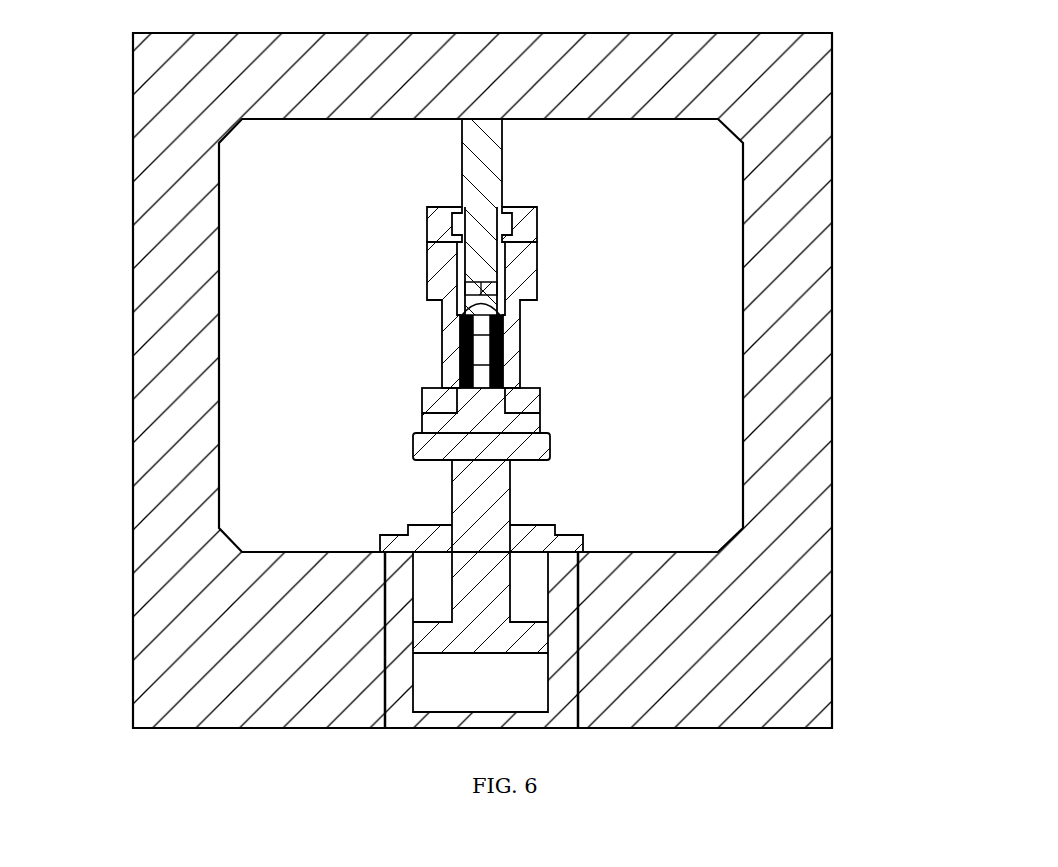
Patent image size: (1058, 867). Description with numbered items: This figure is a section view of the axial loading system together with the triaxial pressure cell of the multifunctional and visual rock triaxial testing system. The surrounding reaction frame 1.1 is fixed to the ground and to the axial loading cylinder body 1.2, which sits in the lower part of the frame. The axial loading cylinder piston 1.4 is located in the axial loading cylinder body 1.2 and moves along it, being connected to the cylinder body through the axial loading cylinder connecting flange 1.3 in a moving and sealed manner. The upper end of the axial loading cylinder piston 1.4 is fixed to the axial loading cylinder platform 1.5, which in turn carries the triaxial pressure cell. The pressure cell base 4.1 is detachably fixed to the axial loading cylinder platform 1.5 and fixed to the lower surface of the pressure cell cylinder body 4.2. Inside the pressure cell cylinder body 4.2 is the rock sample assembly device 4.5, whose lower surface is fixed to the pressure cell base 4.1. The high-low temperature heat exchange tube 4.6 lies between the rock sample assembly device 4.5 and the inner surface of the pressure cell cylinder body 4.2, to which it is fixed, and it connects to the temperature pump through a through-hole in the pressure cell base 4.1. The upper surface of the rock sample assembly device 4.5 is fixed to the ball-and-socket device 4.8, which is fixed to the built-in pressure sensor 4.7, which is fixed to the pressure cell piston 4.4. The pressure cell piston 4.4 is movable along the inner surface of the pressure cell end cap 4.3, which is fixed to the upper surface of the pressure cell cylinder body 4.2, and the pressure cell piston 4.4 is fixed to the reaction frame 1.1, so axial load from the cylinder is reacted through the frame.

The reaction frame 1.1 is at (240, 692).
The axial loading cylinder body 1.2 is at (400, 635).
The axial loading cylinder connecting flange 1.3 is at (535, 540).
The axial loading cylinder piston 1.4 is at (495, 628).
The axial loading cylinder platform 1.5 is at (410, 450).
The pressure cell base 4.1 is at (488, 423).
The pressure cell cylinder body 4.2 is at (438, 331).
The pressure cell end cap 4.3 is at (525, 218).
The pressure cell piston 4.4 is at (485, 175).
The rock sample assembly device 4.5 is at (485, 381).
The high-low temperature heat exchange tube 4.6 is at (508, 369).
The built-in pressure sensor 4.7 is at (500, 287).
The ball-and-socket device 4.8 is at (466, 301).